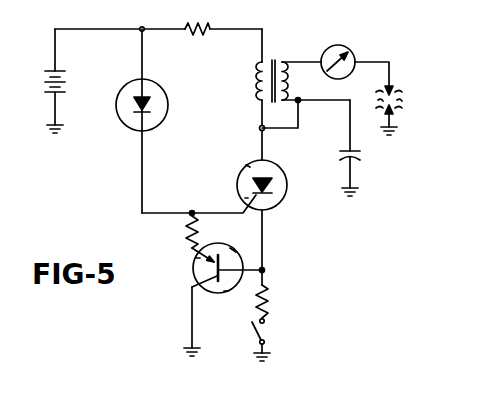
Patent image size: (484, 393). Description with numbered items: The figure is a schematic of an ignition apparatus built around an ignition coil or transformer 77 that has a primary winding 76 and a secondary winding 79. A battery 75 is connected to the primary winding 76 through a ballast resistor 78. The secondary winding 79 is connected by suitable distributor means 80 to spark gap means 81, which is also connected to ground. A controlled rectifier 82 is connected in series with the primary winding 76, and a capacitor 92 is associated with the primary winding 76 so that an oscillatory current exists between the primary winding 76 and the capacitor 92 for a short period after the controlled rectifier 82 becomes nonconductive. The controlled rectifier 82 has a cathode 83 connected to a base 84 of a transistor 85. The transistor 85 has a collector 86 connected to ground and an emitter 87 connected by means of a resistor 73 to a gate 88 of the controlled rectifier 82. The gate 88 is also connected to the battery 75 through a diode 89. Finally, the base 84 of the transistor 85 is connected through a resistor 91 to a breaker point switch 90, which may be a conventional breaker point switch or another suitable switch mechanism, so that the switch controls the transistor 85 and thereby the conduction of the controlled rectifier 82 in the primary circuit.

The resistor 73 is at (186, 230).
The battery 75 is at (68, 79).
The primary winding 76 is at (259, 77).
The ignition coil 77 is at (277, 59).
The ballast resistor 78 is at (200, 38).
The secondary winding 79 is at (290, 72).
The distributor means 80 is at (342, 47).
The spark gap means 81 is at (414, 91).
The controlled rectifier 82 is at (248, 166).
The cathode 83 is at (278, 200).
The base 84 is at (240, 244).
The transistor 85 is at (226, 293).
The collector 86 is at (192, 276).
The emitter 87 is at (196, 258).
The gate 88 is at (246, 197).
The diode 89 is at (123, 124).
The breaker point switch 90 is at (258, 333).
The resistor 91 is at (270, 301).
The capacitor 92 is at (360, 158).